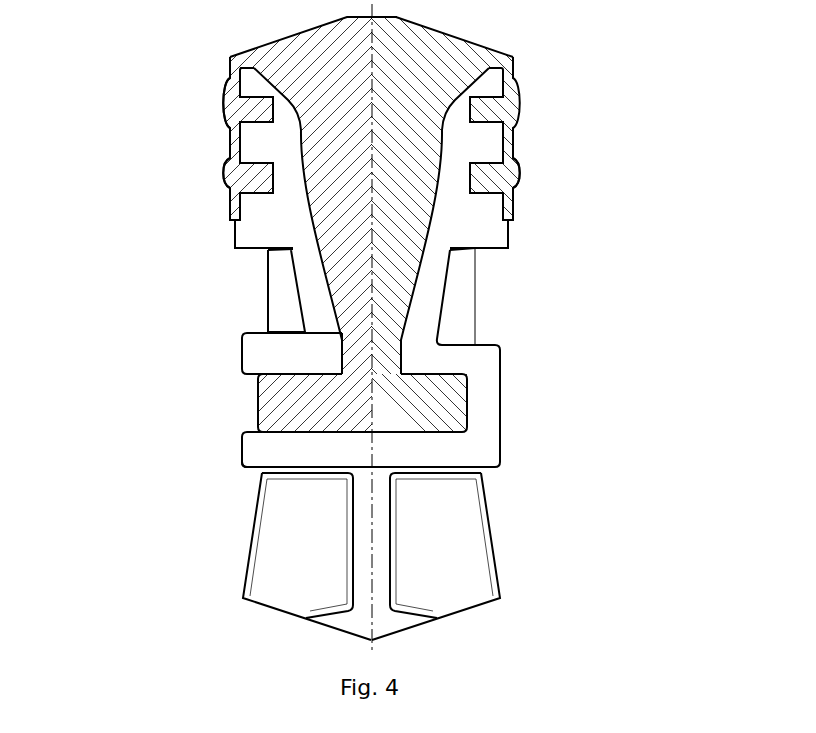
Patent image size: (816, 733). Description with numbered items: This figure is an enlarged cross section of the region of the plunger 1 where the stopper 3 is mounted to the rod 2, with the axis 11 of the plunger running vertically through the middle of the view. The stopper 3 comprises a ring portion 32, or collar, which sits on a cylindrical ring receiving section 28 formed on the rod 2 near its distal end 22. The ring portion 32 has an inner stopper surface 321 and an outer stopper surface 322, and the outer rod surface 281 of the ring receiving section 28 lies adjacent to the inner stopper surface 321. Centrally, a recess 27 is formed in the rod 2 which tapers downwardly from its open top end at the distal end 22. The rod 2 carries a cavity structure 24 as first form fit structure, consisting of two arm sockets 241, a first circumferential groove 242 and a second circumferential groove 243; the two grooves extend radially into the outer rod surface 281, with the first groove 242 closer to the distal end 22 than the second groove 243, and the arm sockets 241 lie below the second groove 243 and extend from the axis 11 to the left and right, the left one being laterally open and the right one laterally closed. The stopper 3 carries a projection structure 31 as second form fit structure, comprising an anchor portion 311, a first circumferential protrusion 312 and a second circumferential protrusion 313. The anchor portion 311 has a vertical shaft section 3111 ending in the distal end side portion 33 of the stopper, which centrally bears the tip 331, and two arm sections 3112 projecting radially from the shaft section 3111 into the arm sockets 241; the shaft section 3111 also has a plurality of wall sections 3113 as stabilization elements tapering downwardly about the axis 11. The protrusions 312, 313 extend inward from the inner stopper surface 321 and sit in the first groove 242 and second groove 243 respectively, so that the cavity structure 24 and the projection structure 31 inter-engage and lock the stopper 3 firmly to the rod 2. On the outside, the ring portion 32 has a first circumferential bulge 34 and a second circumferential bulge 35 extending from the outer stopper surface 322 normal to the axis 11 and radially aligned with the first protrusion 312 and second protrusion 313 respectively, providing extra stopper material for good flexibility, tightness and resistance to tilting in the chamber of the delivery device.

The plunger 1 is at (198, 537).
The rod 2 is at (503, 521).
The stopper 3 is at (408, 366).
The axis 11 is at (372, 567).
The distal end 22 is at (239, 67).
The cavity structure 24 is at (278, 360).
The recess 27 is at (333, 295).
The ring receiving section 28 is at (578, 164).
The projection structure 31 is at (453, 362).
The ring portion 32 is at (157, 139).
The distal end side portion 33 is at (452, 37).
The first circumferential bulge 34 is at (226, 94).
The second circumferential bulge 35 is at (227, 173).
The arm sockets 241 is at (262, 473).
The first circumferential groove 242 is at (515, 166).
The second circumferential groove 243 is at (485, 205).
The outer rod surface 281 is at (229, 79).
The anchor portion 311 is at (408, 366).
The first circumferential protrusion 312 is at (488, 108).
The second circumferential protrusion 313 is at (513, 186).
The inner stopper surface 321 is at (227, 147).
The outer stopper surface 322 is at (227, 138).
The tip 331 is at (415, 18).
The shaft section 3111 is at (382, 335).
The arm sections 3112 is at (453, 402).
The wall sections 3113 is at (328, 143).